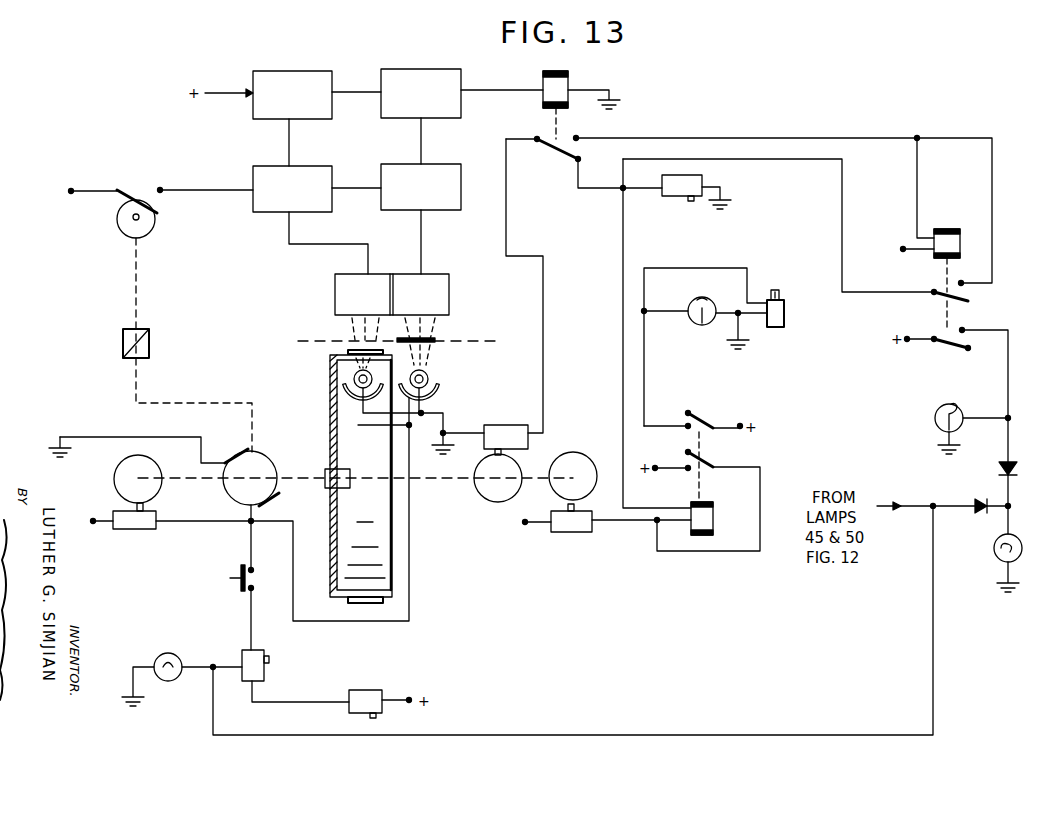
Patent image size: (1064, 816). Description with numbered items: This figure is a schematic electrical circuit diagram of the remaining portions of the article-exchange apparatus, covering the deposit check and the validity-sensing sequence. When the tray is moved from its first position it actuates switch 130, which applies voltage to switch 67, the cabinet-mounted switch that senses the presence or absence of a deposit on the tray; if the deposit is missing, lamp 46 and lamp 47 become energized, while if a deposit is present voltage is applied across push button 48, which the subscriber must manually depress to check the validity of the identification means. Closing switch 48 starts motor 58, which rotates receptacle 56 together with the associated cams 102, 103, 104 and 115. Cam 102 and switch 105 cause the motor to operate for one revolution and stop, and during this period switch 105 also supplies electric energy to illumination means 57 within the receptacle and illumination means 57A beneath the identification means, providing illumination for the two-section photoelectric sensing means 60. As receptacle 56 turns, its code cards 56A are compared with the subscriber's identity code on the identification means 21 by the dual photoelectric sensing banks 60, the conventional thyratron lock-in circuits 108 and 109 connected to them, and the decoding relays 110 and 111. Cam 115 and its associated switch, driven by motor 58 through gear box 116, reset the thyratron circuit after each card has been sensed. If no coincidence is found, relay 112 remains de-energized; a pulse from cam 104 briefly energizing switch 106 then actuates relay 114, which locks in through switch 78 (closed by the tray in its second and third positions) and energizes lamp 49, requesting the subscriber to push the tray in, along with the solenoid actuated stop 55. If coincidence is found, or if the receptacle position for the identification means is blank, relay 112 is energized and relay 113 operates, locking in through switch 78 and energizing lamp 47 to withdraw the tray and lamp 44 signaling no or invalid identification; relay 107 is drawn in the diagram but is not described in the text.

The decoding relay 110 is at (306, 105).
The decoding relay 111 is at (436, 103).
The thyratron lock-in circuit 108 is at (308, 199).
The thyratron lock-in circuit 109 is at (437, 197).
The relay 112 is at (568, 82).
The cam 115 is at (117, 222).
The gear box 116 is at (149, 340).
The photoelectric sensing means 60 is at (400, 274).
The identification means 21 is at (437, 338).
The code means 56A is at (346, 352).
The receptacle 56 is at (376, 516).
The illumination means 57 is at (353, 393).
The illumination means 57A is at (434, 373).
The relay 107 is at (503, 425).
The cam 103 is at (490, 490).
The cam 104 is at (584, 455).
The switch 106 is at (571, 532).
The relay 114 is at (704, 521).
The switch 78 is at (678, 193).
The lamp 49 is at (688, 320).
The solenoid actuated stop 55 is at (785, 316).
The relay 113 is at (942, 232).
The indicating lamp 44 is at (935, 418).
The lamp 47 is at (1022, 549).
The motor 58 is at (276, 468).
The cam 102 is at (116, 481).
The switch 105 is at (132, 530).
The push button 48 is at (240, 573).
The lamp 46 is at (173, 654).
The switch 67 is at (243, 652).
The switch 130 is at (366, 698).